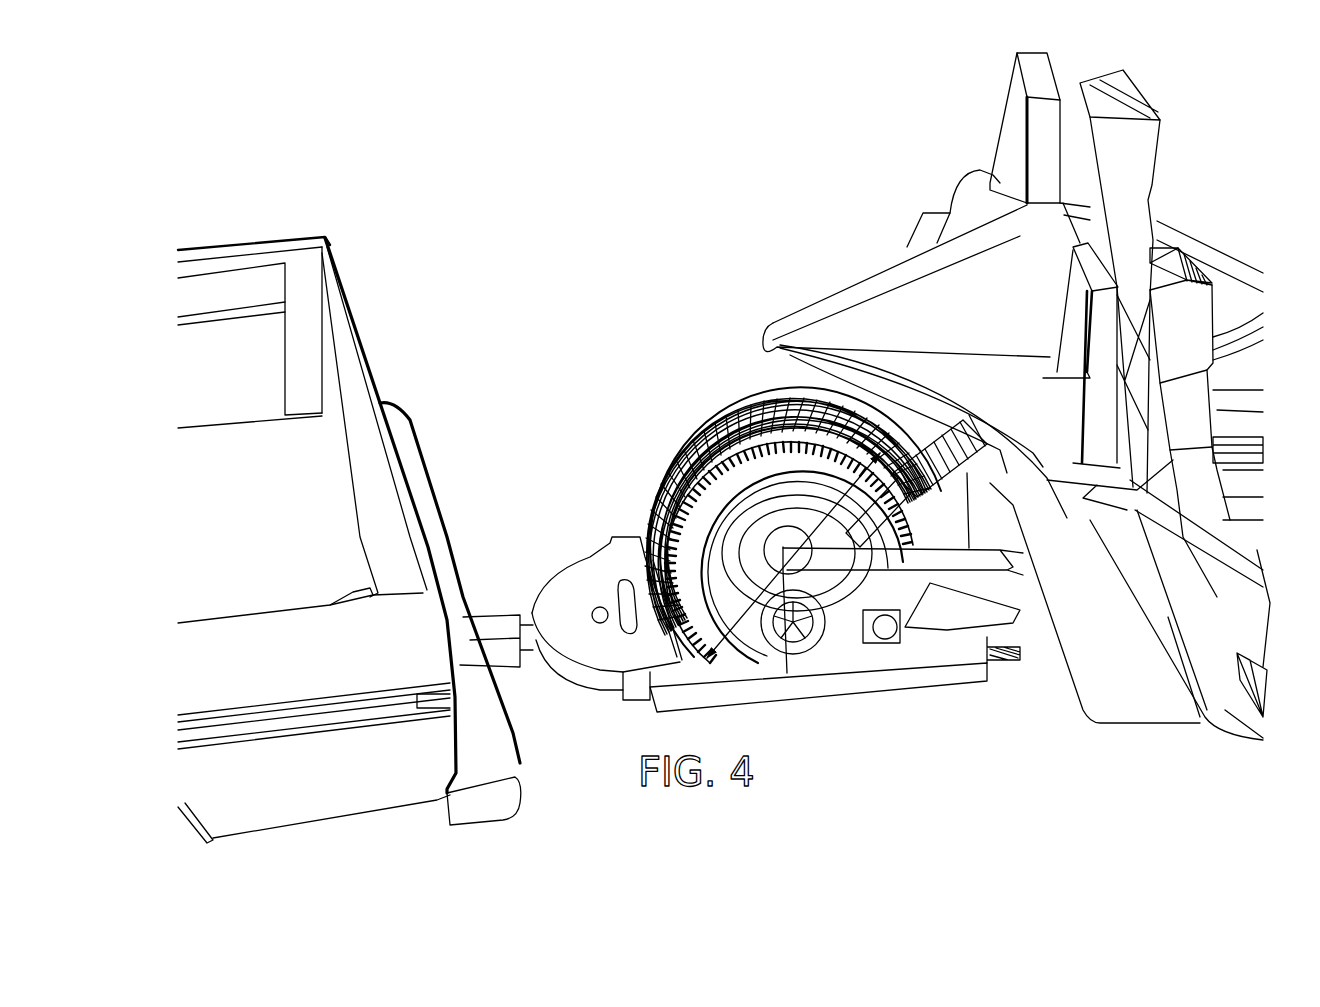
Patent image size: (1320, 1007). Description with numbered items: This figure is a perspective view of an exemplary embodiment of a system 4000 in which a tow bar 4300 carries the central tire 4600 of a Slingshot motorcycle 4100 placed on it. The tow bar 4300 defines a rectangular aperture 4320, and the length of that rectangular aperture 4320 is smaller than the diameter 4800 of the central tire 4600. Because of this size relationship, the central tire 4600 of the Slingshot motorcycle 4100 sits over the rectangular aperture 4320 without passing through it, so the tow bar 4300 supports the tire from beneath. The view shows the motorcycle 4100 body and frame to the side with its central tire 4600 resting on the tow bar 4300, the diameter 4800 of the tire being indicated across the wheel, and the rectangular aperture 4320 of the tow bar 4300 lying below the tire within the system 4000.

The system 4000 is at (668, 149).
The Slingshot motorcycle 4100 is at (1016, 396).
The tow bar 4300 is at (710, 693).
The rectangular aperture 4320 is at (683, 655).
The central tire 4600 is at (700, 422).
The diameter 4800 is at (748, 607).